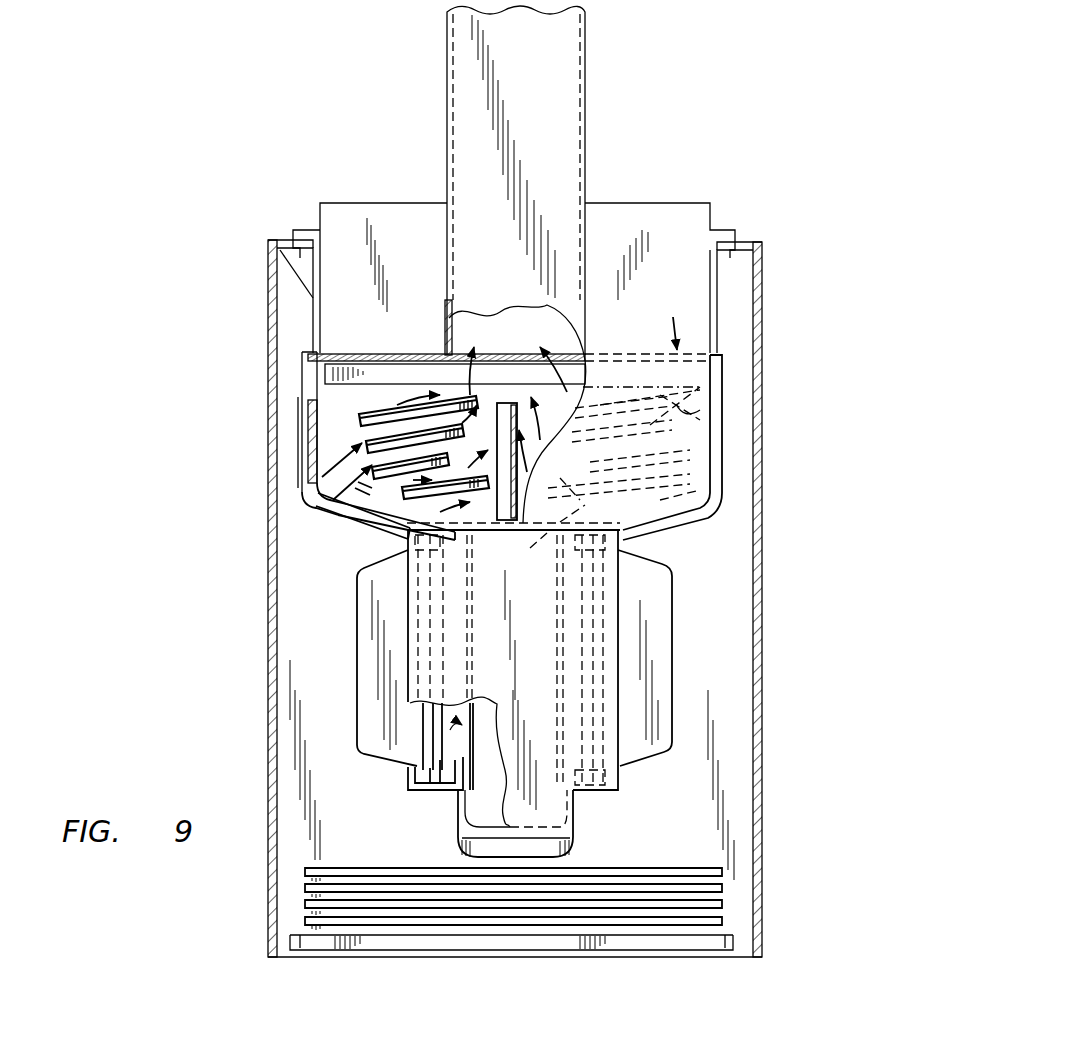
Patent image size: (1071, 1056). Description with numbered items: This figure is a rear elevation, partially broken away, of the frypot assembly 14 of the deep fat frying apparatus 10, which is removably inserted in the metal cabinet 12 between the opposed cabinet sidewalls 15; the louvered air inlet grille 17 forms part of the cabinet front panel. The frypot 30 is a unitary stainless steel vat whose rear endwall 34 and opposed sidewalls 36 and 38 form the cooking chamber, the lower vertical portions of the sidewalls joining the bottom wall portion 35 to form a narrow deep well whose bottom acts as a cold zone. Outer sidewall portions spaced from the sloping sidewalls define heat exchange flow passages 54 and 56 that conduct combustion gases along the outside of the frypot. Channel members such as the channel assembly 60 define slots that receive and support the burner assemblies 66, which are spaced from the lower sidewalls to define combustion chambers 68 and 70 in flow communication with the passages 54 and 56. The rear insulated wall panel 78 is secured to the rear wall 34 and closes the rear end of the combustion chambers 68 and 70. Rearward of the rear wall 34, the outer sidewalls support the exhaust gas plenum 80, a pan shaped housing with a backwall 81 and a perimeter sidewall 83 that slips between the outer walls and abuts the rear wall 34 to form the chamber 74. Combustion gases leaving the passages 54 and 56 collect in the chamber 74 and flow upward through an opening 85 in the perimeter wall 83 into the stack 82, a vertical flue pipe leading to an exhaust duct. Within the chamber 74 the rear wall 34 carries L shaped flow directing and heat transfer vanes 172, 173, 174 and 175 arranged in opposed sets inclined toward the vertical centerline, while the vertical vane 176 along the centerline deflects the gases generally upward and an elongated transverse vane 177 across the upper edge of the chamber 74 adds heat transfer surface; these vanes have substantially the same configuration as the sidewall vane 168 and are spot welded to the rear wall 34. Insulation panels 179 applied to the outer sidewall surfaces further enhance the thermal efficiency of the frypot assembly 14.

The cooking apparatus 10 is at (790, 258).
The cabinet 12 is at (765, 453).
The frypot assembly 14 is at (307, 276).
The sidewalls 15 is at (268, 745).
The louvered air inlet grille 17 is at (615, 872).
The frypot 30 is at (363, 207).
The rear endwall 34 is at (665, 213).
The bottom wall portion 35 is at (478, 850).
The sidewall 36 is at (278, 277).
The sidewall 38 is at (762, 302).
The heat exchange flow passage 54 is at (408, 548).
The heat exchange flow passage 56 is at (655, 535).
The channel assembly 60 is at (428, 790).
The burner assemblies 66 is at (372, 758).
The combustion chamber 68 is at (448, 748).
The combustion chamber 70 is at (598, 642).
The chamber 74 is at (470, 393).
The rear insulated wall panel 78 is at (612, 600).
The exhaust gas plenum 80 is at (662, 325).
The backwall 81 is at (683, 413).
The stack 82 is at (586, 118).
The perimeter sidewall 83 is at (372, 354).
The opening 85 is at (452, 354).
The vane 168 is at (340, 513).
The vane 172 is at (473, 516).
The vane 173 is at (318, 498).
The vane 174 is at (362, 422).
The vane 175 is at (380, 420).
The vane 176 is at (508, 405).
The transverse vane 177 is at (420, 378).
The insulation panels 179 is at (308, 360).